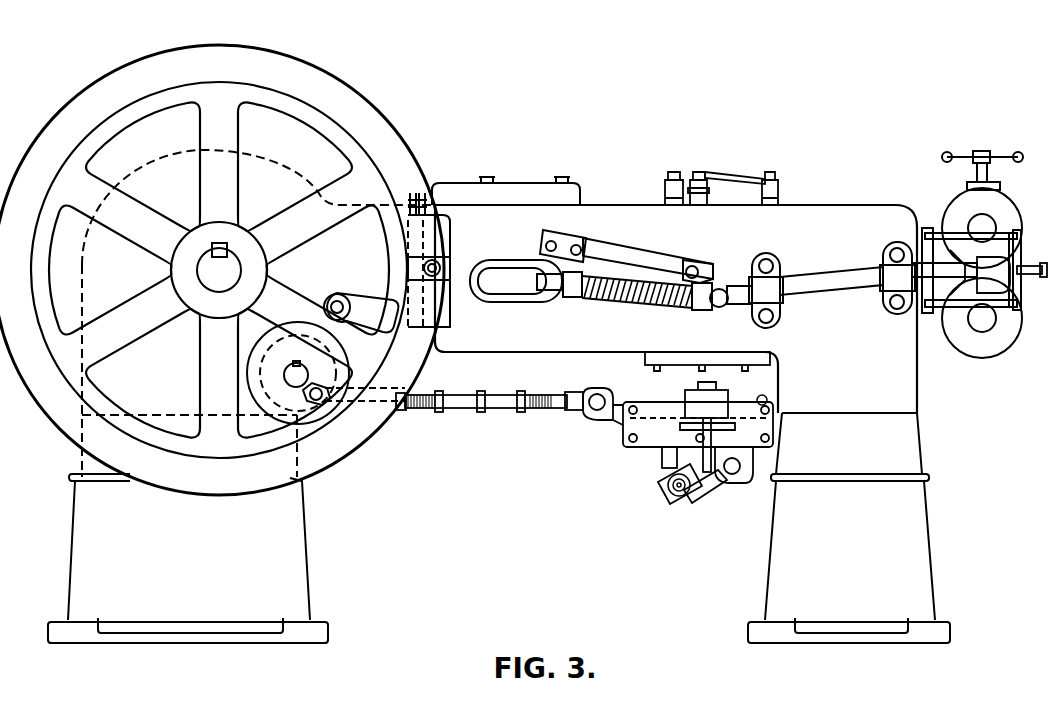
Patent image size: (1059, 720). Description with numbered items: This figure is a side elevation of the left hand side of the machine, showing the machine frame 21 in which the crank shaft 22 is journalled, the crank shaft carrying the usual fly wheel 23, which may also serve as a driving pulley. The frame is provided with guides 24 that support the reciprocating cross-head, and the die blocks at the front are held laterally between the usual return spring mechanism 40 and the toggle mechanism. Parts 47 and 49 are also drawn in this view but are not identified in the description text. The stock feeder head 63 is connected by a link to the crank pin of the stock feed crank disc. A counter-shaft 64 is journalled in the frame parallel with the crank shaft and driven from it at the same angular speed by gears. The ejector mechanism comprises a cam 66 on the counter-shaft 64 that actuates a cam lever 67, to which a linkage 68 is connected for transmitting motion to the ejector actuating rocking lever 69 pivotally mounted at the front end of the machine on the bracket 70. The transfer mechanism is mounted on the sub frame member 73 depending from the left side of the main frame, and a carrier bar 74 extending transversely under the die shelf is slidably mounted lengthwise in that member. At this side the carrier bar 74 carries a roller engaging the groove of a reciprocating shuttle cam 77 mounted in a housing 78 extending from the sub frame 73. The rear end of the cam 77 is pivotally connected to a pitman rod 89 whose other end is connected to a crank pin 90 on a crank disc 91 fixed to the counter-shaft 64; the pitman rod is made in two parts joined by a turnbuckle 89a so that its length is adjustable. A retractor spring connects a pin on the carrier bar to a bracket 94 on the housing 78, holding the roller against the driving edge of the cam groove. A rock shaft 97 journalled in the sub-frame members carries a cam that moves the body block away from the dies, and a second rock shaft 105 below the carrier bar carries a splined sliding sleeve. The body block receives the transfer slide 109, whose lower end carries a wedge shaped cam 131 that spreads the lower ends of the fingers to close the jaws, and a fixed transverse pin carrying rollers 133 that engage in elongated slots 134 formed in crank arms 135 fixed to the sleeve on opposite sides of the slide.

The machine frame 21 is at (676, 309).
The crank shaft 22 is at (219, 267).
The fly wheel 23 is at (222, 270).
The guides 24 is at (527, 182).
The return spring mechanism 40 is at (617, 258).
The bolts 47 is at (710, 172).
The adjusting screw 49 is at (1020, 328).
The stock feeder head 63 is at (967, 188).
The counter-shaft 64 is at (352, 425).
The cam 66 is at (262, 353).
The cam lever 67 is at (361, 312).
The linkage 68 is at (608, 291).
The ejector actuating rocking lever 69 is at (983, 275).
The bracket 70 is at (971, 270).
The sub frame member 73 is at (707, 375).
The carrier bar 74 is at (690, 408).
The shuttle cam 77 is at (606, 424).
The housing 78 is at (648, 416).
The pitman rod 89 is at (544, 410).
The turnbuckle 89a is at (460, 410).
The crank pin 90 is at (312, 406).
The crank disc 91 is at (248, 372).
The bracket 94 is at (716, 392).
The rock shaft 97 is at (765, 398).
The second rock shaft 105 is at (733, 474).
The transfer slide 109 is at (688, 458).
The wedge shaped cam 131 is at (662, 461).
The rollers 133 is at (688, 500).
The elongated slots 134 is at (658, 488).
The crank arms 135 is at (683, 497).